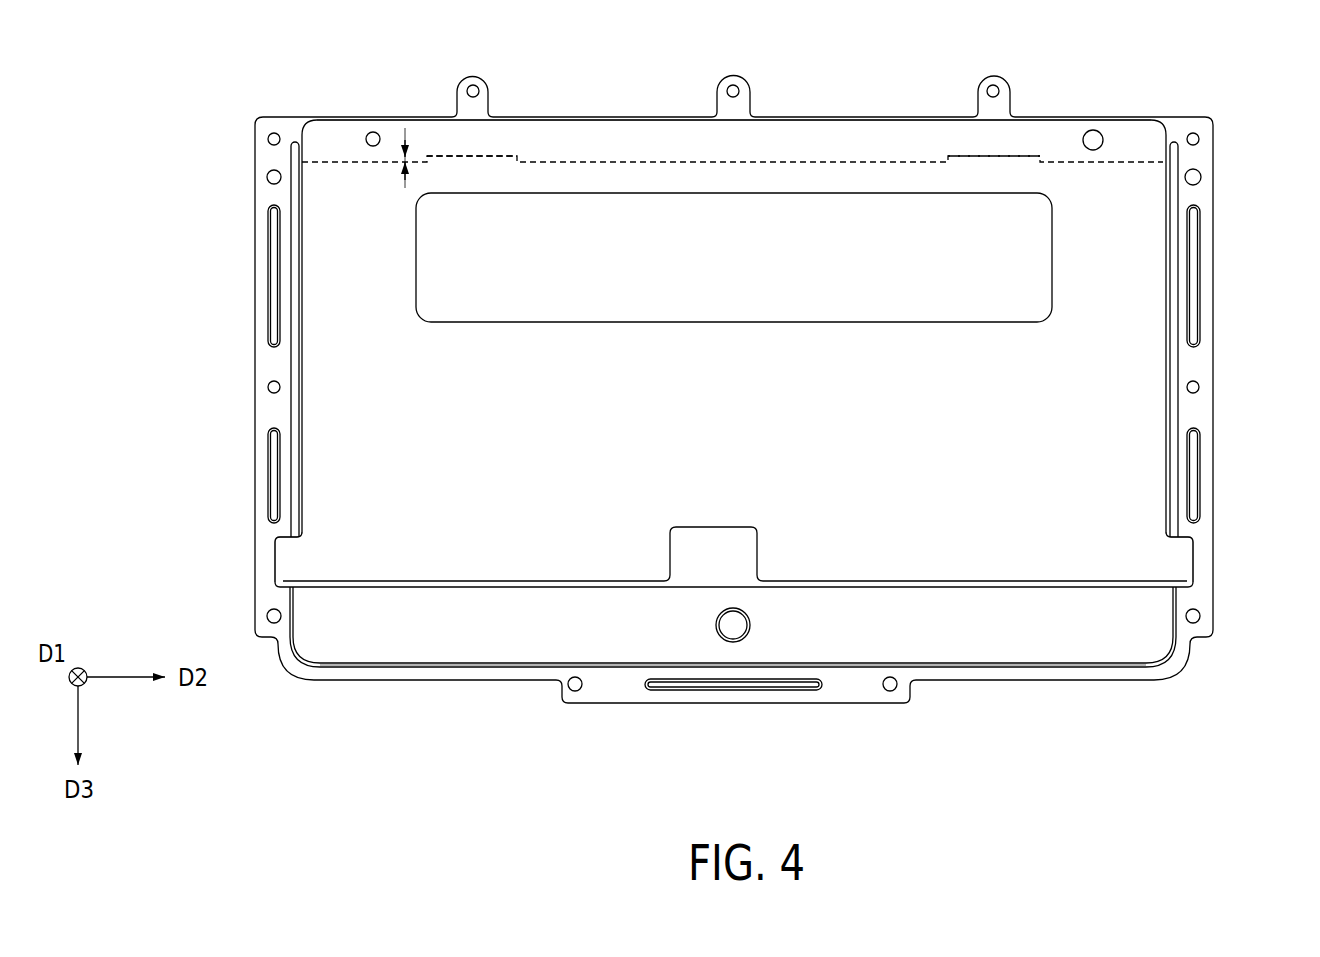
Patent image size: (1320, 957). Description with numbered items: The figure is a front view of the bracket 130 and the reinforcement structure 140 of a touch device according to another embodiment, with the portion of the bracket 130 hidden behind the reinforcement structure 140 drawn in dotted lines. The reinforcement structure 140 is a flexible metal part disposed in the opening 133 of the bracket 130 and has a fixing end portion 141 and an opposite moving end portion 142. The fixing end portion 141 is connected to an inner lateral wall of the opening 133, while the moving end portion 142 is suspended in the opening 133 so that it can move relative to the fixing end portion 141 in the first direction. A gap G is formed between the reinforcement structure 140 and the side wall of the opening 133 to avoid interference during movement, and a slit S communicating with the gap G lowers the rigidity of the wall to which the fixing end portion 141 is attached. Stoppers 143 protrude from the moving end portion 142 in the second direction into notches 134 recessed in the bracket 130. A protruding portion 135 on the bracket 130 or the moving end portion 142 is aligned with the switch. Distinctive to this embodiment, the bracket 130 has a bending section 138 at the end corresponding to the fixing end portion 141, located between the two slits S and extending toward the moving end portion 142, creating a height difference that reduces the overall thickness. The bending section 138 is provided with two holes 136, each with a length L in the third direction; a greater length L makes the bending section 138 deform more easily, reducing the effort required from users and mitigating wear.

The bracket 130 is at (1005, 630).
The opening 133 is at (295, 363).
The notch 134 is at (277, 555).
The protruding portion 135 is at (733, 625).
The hole 136 is at (503, 157).
The bending section 138 is at (793, 160).
The reinforcement structure 140 is at (1115, 263).
The fixing end portion 141 is at (897, 143).
The moving end portion 142 is at (500, 550).
The stopper 143 is at (292, 568).
The slit S is at (297, 153).
The gap G is at (298, 413).
The length L is at (405, 157).